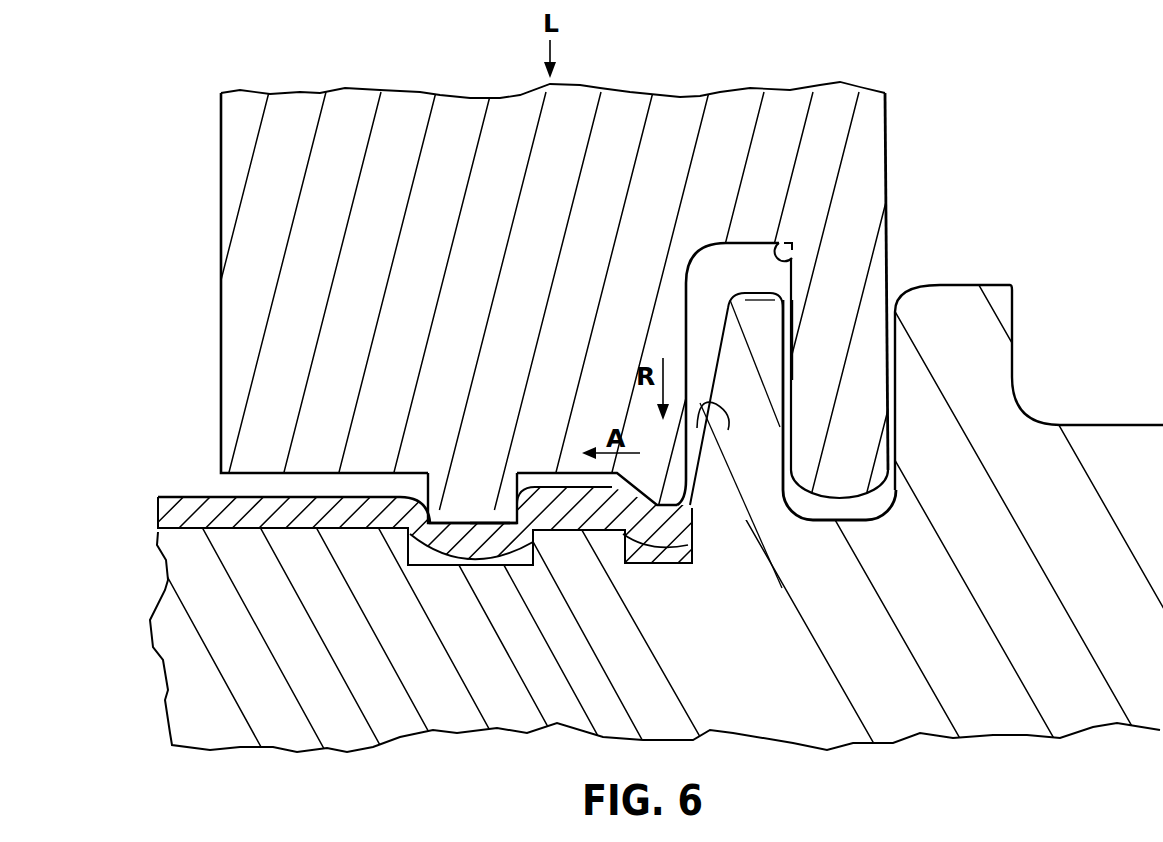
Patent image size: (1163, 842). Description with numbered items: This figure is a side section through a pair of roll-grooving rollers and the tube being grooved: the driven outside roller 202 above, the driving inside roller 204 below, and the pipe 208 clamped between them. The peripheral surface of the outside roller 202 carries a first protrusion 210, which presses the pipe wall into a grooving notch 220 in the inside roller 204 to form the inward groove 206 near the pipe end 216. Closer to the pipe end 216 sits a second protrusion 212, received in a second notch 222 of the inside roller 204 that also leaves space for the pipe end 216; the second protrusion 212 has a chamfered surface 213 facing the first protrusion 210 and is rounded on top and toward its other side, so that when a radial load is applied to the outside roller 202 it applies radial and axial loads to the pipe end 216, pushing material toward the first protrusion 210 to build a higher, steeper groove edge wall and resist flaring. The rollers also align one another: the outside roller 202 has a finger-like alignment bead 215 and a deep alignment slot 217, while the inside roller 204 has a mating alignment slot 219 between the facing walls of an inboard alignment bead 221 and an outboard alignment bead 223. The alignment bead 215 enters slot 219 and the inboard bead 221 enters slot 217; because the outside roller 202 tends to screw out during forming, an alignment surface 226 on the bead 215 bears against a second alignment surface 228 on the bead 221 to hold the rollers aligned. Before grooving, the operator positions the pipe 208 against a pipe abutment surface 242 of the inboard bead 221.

The outside roller 202 is at (221, 207).
The inside roller 204 is at (165, 655).
The inward groove 206 is at (488, 521).
The pipe 208 is at (187, 498).
The first protrusion 210 is at (467, 503).
The second protrusion 212 is at (667, 492).
The chamfered surface 213 is at (588, 530).
The alignment bead 215 is at (833, 443).
The pipe end 216 is at (682, 535).
The alignment slot 217 is at (757, 282).
The mating alignment slot 219 is at (858, 510).
The grooving notch 220 is at (472, 567).
The inboard alignment bead 221 is at (748, 332).
The second indentation or notch 222 is at (651, 565).
The outboard alignment bead 223 is at (997, 362).
The alignment surface 226 is at (783, 243).
The second alignment surface 228 is at (793, 337).
The pipe abutment surface 242 is at (732, 426).